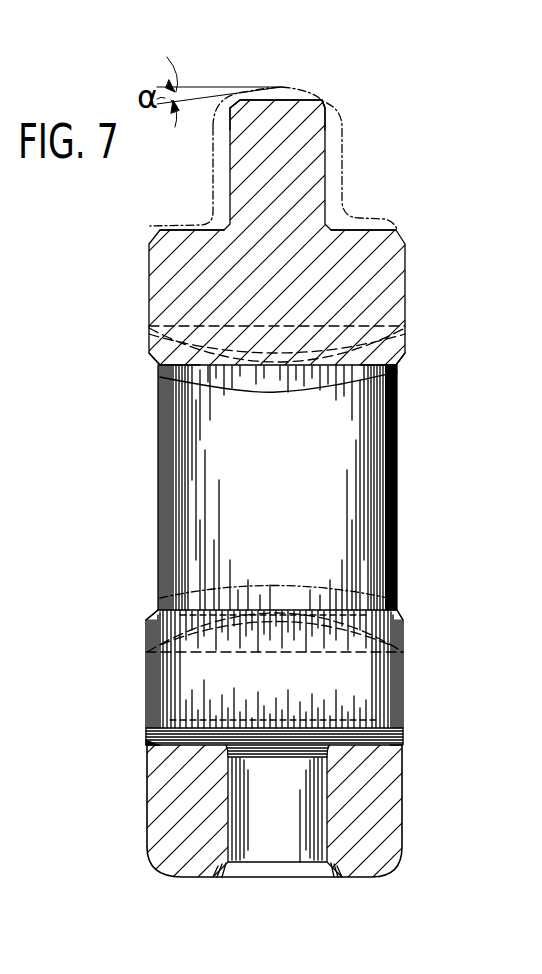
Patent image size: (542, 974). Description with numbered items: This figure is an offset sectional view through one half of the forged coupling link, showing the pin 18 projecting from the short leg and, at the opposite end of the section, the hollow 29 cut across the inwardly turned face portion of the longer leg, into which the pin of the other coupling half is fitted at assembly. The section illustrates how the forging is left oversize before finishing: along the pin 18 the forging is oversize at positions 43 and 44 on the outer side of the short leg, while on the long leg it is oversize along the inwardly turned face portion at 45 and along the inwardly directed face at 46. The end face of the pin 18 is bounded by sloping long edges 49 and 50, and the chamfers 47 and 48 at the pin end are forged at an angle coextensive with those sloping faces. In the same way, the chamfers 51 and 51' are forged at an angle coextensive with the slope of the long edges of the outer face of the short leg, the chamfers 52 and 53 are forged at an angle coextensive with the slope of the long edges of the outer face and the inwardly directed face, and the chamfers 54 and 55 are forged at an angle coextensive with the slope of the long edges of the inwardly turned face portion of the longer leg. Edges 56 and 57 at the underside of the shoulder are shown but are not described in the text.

The pin 18 is at (306, 148).
The hollow 29 is at (304, 877).
The oversize position 43 is at (337, 192).
The oversize position 44 is at (222, 174).
The oversize condition 45 is at (285, 735).
The oversize condition 46 is at (292, 600).
The chamfer 47 is at (333, 108).
The chamfer 48 is at (227, 108).
The long edge 49 is at (322, 100).
The long edge 50 is at (224, 103).
The chamfer 51 is at (382, 210).
The chamfer 51' is at (164, 227).
The chamfer 52 is at (398, 613).
The chamfer 53 is at (157, 613).
The chamfer 54 is at (402, 743).
The chamfer 55 is at (152, 743).
The right head bottom edge 56 is at (400, 361).
The left head bottom edge 57 is at (152, 364).